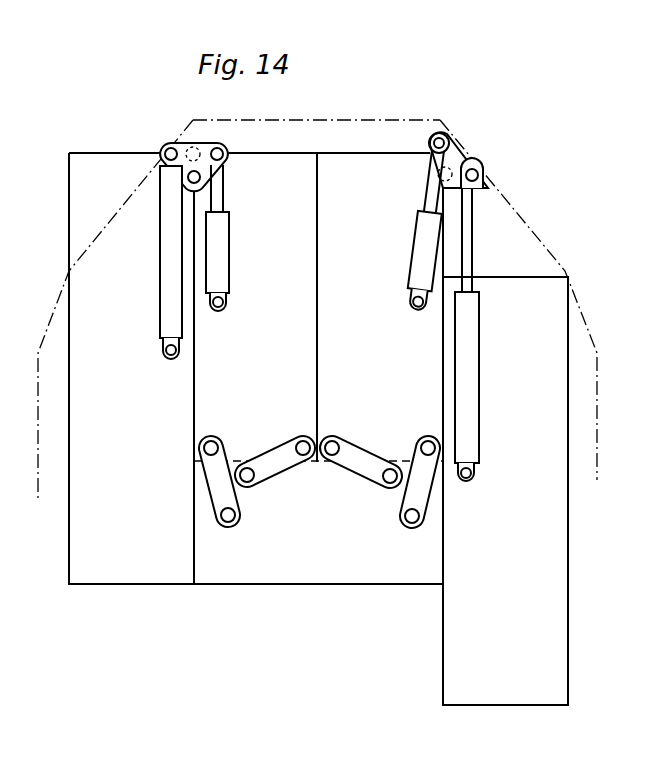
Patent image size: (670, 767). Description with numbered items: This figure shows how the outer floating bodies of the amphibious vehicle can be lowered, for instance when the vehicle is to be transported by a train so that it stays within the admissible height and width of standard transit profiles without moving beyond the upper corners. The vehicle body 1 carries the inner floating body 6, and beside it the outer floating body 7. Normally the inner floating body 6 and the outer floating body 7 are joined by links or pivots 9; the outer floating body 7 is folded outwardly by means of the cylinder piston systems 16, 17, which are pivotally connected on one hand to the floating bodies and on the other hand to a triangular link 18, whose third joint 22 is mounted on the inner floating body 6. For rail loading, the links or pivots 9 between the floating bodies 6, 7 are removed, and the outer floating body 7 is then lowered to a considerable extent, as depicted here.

The folding panel 1 is at (325, 572).
The inner floating body 6 is at (338, 165).
The outer floating body 7 is at (562, 307).
The links or pivots 9 is at (450, 155).
The cylinder piston system 16 is at (423, 250).
The cylinder piston system 17 is at (470, 399).
The triangular link 18 is at (463, 190).
The third joint 22 is at (438, 177).